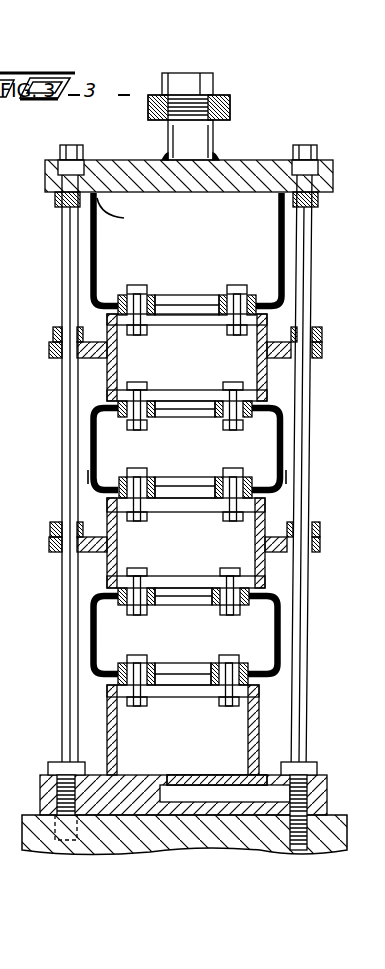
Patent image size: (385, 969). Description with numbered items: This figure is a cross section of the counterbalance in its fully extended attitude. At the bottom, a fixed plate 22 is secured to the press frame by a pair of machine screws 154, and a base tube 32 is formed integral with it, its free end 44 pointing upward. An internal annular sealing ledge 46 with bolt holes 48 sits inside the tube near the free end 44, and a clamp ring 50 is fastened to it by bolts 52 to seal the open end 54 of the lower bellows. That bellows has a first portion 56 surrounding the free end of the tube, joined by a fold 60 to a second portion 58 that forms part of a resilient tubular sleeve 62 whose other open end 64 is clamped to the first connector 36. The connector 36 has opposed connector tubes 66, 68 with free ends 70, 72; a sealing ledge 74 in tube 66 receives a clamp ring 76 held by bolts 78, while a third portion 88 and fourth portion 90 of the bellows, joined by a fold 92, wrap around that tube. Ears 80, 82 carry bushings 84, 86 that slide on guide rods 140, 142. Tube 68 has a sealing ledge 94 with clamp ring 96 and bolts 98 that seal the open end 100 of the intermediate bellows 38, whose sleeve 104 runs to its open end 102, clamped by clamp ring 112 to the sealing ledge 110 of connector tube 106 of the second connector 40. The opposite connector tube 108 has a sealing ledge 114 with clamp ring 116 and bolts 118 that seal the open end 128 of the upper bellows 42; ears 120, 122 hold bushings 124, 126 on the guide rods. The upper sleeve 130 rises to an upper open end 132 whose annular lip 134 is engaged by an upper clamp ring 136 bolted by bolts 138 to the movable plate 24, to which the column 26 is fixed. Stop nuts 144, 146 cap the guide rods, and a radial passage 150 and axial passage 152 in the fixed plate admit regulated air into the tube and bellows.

The fixed plate 22 is at (45, 790).
The movable plate 24 is at (255, 170).
The column 26 is at (196, 143).
The base tube 32 is at (268, 708).
The first connector 36 is at (268, 522).
The intermediate unconfined bellows 38 is at (285, 420).
The second connector 40 is at (322, 342).
The upper unconfined bellows 42 is at (288, 280).
The free end 44 is at (285, 660).
The internal annular sealing ledge 46 is at (125, 698).
The bolt holes 48 is at (197, 690).
The clamp ring 50 is at (150, 660).
The bolts 52 is at (140, 660).
The open end 54 is at (222, 660).
The first portion 56 is at (100, 672).
The second portion 58 is at (290, 678).
The fold 60 is at (270, 692).
The resilient tubular sleeve 62 is at (290, 640).
The other open end 64 is at (160, 590).
The connector tube 66 is at (110, 570).
The connector tube 68 is at (75, 500).
The free end 70 is at (292, 590).
The free end 72 is at (255, 480).
The internal annular sealing ledge 74 is at (137, 568).
The clamp ring 76 is at (182, 612).
The bolts 78 is at (232, 570).
The ear 80 is at (50, 548).
The ear 82 is at (320, 541).
The bushing 84 is at (55, 545).
The bushing 86 is at (320, 553).
The third portion 88 is at (97, 614).
The fourth portion 90 is at (96, 598).
The fold 92 is at (283, 607).
The internal annular sealing ledge 94 is at (290, 492).
The clamp ring 96 is at (162, 490).
The bolts 98 is at (136, 470).
The open end 100 is at (202, 495).
The open end 102 is at (176, 405).
The resilient tubular sleeve 104 is at (92, 440).
The connector tube 106 is at (110, 384).
The connector tube 108 is at (112, 320).
The internal annular sealing ledge 110 is at (138, 400).
The clamp ring 112 is at (170, 418).
The internal annular sealing ledge 114 is at (240, 288).
The clamp ring 116 is at (148, 298).
The bolts 118 is at (134, 288).
The ear 120 is at (55, 334).
The ear 122 is at (322, 350).
The bushing 124 is at (52, 355).
The bushing 126 is at (322, 355).
The open end 128 is at (196, 306).
The resilient tubular sleeve 130 is at (90, 255).
The upper open end 132 is at (108, 209).
The annular lip 134 is at (96, 200).
The upper clamp ring 136 is at (58, 200).
The bolts 138 is at (306, 170).
The guide rod 140 is at (70, 460).
The guide rod 142 is at (302, 432).
The stop nut 144 is at (65, 148).
The stop nut 146 is at (312, 150).
The radial passage 150 is at (215, 805).
The axial passage 152 is at (175, 790).
The machine screws 154 is at (305, 775).